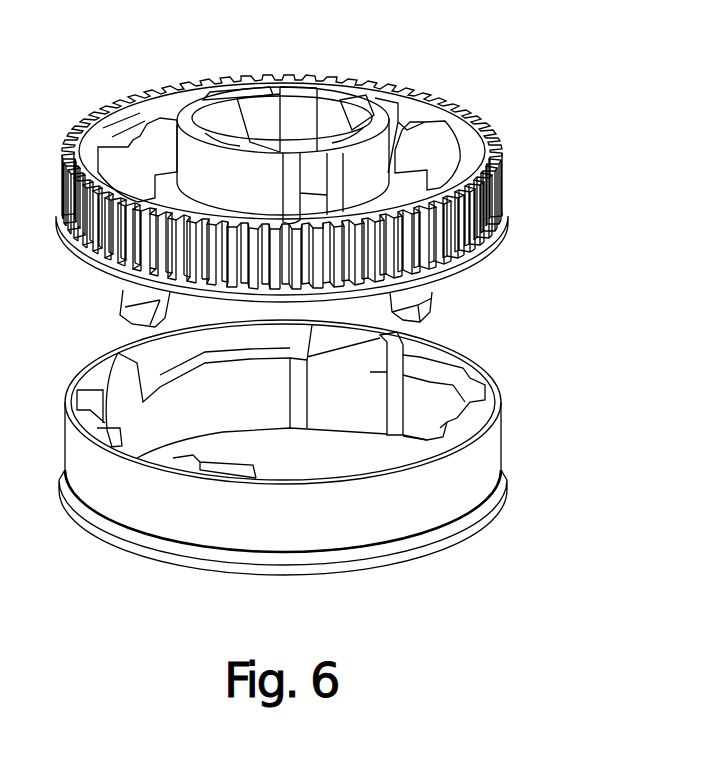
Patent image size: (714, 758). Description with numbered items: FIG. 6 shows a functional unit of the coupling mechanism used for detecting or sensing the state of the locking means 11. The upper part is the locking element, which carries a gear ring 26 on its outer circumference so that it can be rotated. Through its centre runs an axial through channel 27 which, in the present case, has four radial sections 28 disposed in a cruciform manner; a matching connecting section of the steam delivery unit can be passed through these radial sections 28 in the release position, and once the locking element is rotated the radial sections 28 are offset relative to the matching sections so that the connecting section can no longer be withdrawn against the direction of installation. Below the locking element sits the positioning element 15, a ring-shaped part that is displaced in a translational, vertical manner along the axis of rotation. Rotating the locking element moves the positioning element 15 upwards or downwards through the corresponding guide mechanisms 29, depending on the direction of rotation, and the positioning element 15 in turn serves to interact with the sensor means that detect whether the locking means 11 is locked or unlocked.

The locking means 11 is at (497, 217).
The positioning element 15 is at (437, 492).
The gear ring 26 is at (493, 162).
The axial through channel 27 is at (305, 120).
The radial sections 28 is at (213, 90).
The guide mechanisms 29 is at (407, 368).